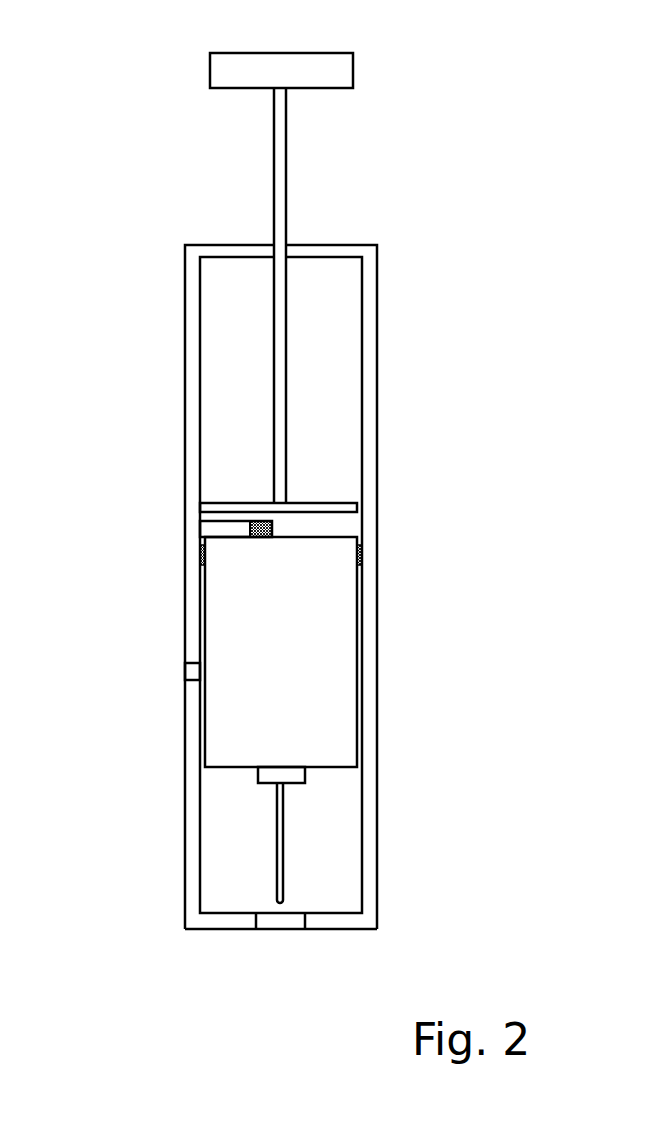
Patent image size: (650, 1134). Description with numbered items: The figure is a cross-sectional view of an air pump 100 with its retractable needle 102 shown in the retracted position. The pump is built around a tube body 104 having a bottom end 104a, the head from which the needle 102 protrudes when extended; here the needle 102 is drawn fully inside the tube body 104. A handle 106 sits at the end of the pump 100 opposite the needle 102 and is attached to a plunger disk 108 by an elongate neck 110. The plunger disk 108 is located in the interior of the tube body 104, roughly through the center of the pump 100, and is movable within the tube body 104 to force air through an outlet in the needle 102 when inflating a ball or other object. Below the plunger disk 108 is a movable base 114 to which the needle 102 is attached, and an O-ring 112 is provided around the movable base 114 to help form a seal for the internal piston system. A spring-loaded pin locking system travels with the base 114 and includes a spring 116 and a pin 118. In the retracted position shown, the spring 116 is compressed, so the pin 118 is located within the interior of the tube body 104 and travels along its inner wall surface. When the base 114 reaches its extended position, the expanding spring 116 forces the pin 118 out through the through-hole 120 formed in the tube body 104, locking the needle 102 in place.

The air pump 100 is at (104, 349).
The retractable needle 102 is at (284, 835).
The tube body 104 is at (184, 815).
The bottom end 104a is at (212, 929).
The handle 106 is at (210, 65).
The plunger disk 108 is at (347, 502).
The elongate neck 110 is at (273, 201).
The O-ring 112 is at (362, 558).
The movable base 114 is at (335, 670).
The spring 116 is at (272, 525).
The pin 118 is at (208, 529).
The through-hole 120 is at (185, 672).